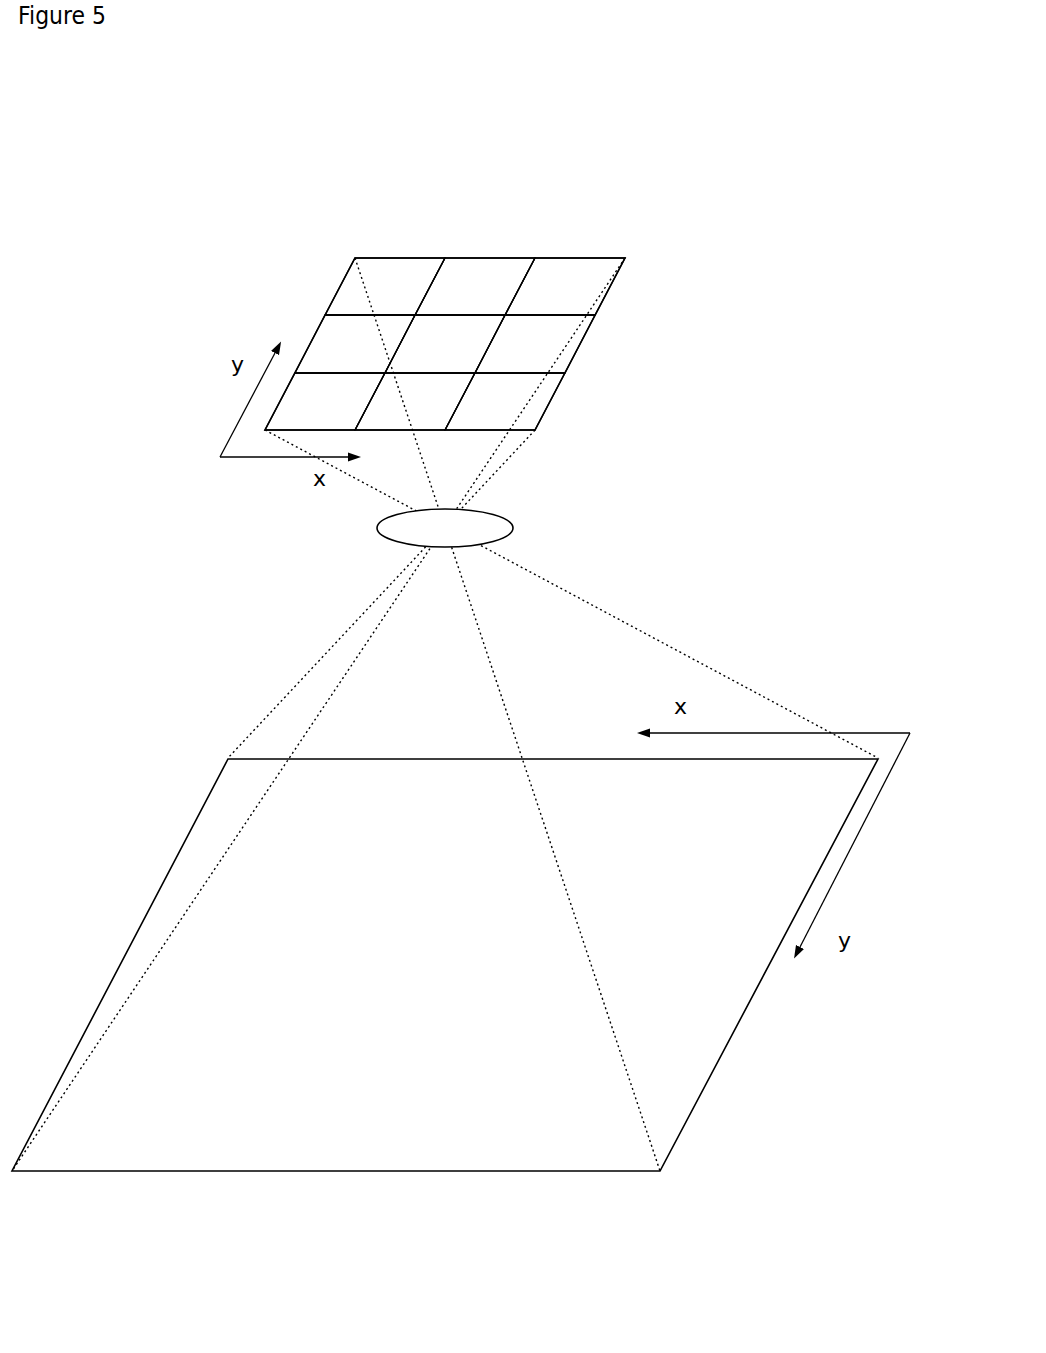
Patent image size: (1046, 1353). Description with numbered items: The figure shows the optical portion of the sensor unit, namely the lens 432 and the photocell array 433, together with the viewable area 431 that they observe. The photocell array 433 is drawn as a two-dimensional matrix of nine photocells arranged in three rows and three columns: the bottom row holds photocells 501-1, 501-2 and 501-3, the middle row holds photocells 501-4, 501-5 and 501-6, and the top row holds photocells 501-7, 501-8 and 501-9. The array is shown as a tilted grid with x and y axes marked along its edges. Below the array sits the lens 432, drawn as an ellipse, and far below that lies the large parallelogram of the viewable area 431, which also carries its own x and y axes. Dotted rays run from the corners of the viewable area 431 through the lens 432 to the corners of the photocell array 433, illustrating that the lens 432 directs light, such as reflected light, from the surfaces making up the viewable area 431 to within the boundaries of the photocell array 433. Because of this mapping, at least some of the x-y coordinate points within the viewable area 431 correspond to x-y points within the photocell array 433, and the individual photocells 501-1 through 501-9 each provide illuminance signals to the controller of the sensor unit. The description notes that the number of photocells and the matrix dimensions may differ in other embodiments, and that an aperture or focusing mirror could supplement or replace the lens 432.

The photocell 501-1 is at (254, 338).
The photocell 501-2 is at (363, 452).
The photocell 501-3 is at (558, 393).
The photocell 501-4 is at (279, 290).
The photocell 501-5 is at (356, 238).
The photocell 501-6 is at (593, 337).
The photocell 501-7 is at (306, 233).
The photocell 501-8 is at (391, 181).
The photocell 501-9 is at (532, 222).
The photocell array 433 is at (536, 304).
The lens 432 is at (511, 502).
The viewable area 431 is at (445, 1015).